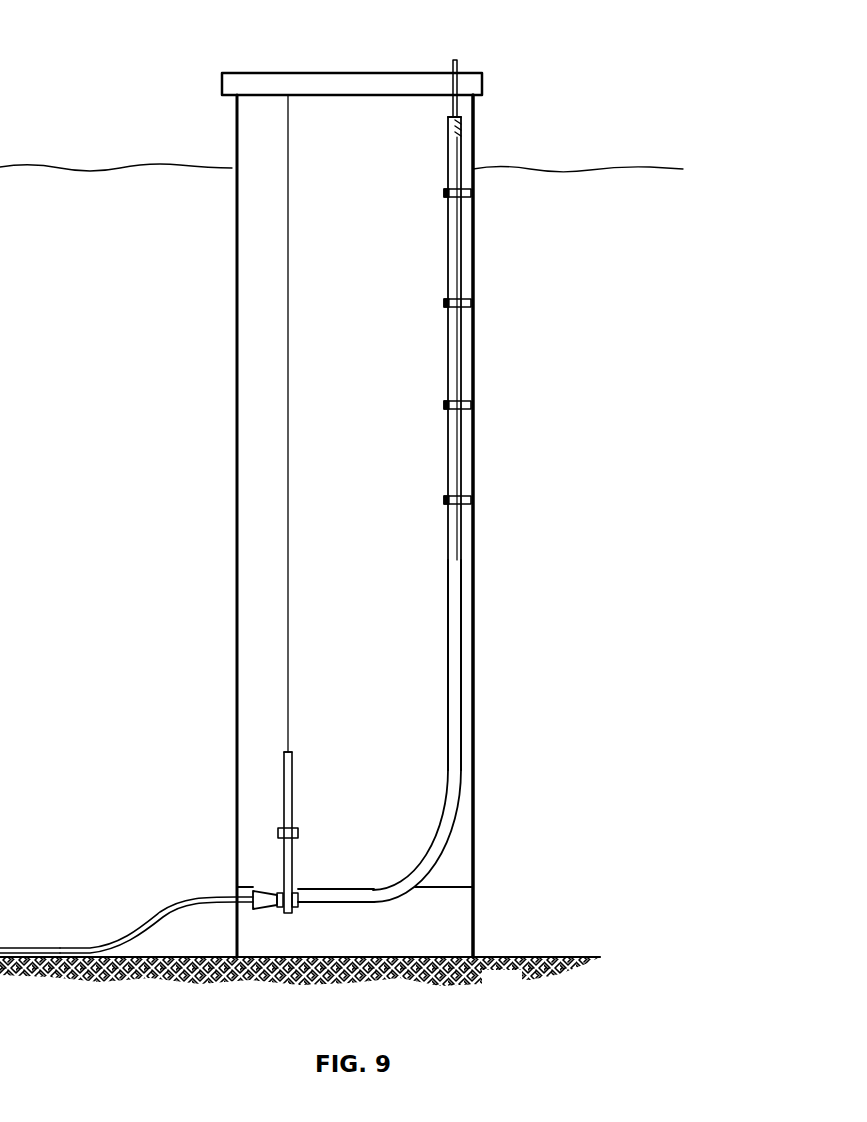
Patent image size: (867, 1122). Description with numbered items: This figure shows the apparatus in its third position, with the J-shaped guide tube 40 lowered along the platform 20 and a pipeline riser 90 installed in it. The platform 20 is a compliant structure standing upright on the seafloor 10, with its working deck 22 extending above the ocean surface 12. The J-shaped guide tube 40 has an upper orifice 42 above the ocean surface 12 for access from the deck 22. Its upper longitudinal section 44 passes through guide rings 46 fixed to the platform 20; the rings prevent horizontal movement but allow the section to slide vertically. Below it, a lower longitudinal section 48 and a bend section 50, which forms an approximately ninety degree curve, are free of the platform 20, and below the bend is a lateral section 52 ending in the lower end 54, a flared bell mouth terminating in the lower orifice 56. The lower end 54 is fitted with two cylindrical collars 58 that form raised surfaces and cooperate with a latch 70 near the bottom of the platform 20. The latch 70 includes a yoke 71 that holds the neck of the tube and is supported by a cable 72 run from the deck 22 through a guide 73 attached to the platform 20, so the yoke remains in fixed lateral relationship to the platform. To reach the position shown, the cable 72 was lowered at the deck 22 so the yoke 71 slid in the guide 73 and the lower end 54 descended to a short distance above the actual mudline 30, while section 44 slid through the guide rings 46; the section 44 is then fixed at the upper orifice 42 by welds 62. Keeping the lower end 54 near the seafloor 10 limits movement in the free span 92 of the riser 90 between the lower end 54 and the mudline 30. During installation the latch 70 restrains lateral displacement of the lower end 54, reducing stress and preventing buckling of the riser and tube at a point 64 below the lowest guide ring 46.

The seafloor 10 is at (300, 980).
The ocean surface 12 is at (175, 168).
The platform 20 is at (170, 255).
The working deck 22 is at (230, 78).
The actual mudline 30 is at (448, 957).
The J-shaped guide tube 40 is at (455, 168).
The upper orifice 42 is at (470, 117).
The upper longitudinal section 44 is at (415, 351).
The guide rings 46 is at (444, 193).
The lower longitudinal section 48 is at (430, 593).
The bend section 50 is at (414, 858).
The lateral section 52 is at (340, 889).
The lower end 54 is at (245, 886).
The lower orifice 56 is at (250, 894).
The cylindrical collars 58 is at (280, 908).
The welds 62 is at (465, 132).
The point below lowest guide ring 64 is at (460, 510).
The latch 70 is at (300, 783).
The yoke 71 is at (285, 775).
The cable 72 is at (288, 410).
The guide 73 is at (298, 834).
The pipeline riser 90 is at (60, 945).
The free span 92 is at (170, 905).